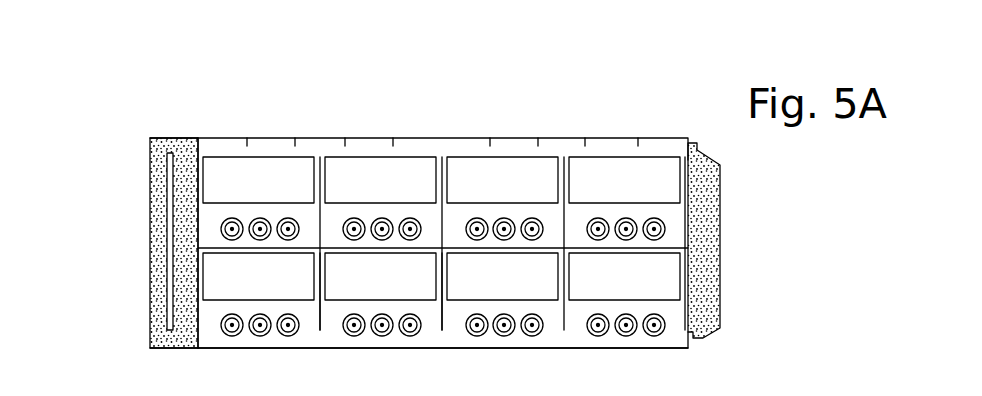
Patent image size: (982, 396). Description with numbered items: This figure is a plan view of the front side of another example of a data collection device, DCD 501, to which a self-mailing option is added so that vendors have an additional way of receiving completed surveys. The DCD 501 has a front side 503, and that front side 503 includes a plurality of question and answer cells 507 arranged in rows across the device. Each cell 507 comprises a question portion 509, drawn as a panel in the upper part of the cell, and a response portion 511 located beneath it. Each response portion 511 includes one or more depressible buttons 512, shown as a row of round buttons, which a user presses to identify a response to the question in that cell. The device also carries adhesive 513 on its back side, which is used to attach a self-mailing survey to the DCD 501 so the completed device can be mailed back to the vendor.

The DCD 501 is at (629, 61).
The front side 503 is at (718, 250).
The question and answer cell 507 is at (205, 215).
The question portion 509 is at (251, 172).
The response portion 511 is at (333, 335).
The depressible button 512 is at (288, 216).
The adhesive 513 is at (233, 395).